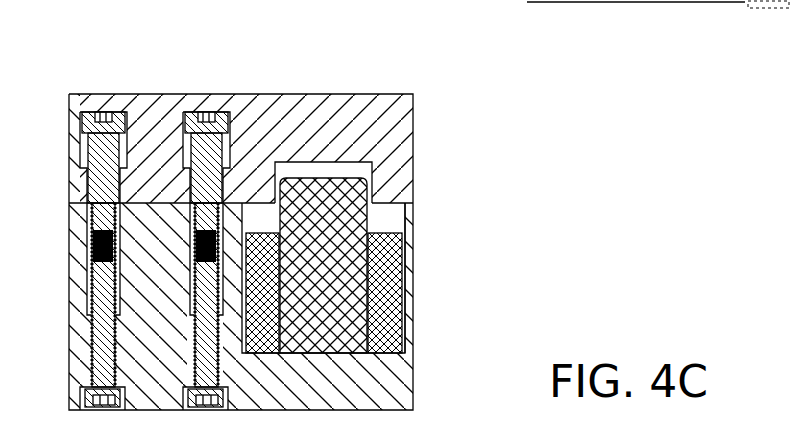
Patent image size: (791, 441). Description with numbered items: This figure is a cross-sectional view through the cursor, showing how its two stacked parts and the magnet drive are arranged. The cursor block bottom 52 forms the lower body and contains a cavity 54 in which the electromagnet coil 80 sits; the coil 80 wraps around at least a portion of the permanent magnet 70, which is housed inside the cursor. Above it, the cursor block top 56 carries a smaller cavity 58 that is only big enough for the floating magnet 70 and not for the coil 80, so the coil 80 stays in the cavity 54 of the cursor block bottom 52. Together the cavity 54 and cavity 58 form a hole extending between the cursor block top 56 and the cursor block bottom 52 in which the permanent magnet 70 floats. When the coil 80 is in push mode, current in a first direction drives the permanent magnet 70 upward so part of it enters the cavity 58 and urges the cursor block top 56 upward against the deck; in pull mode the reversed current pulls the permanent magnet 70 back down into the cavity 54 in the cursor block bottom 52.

The cursor block bottom 52 is at (387, 397).
The cavity 54 is at (386, 228).
The cursor block top 56 is at (296, 114).
The cavity 58 is at (366, 166).
The permanent magnet 70 is at (408, 216).
The coil 80 is at (398, 313).